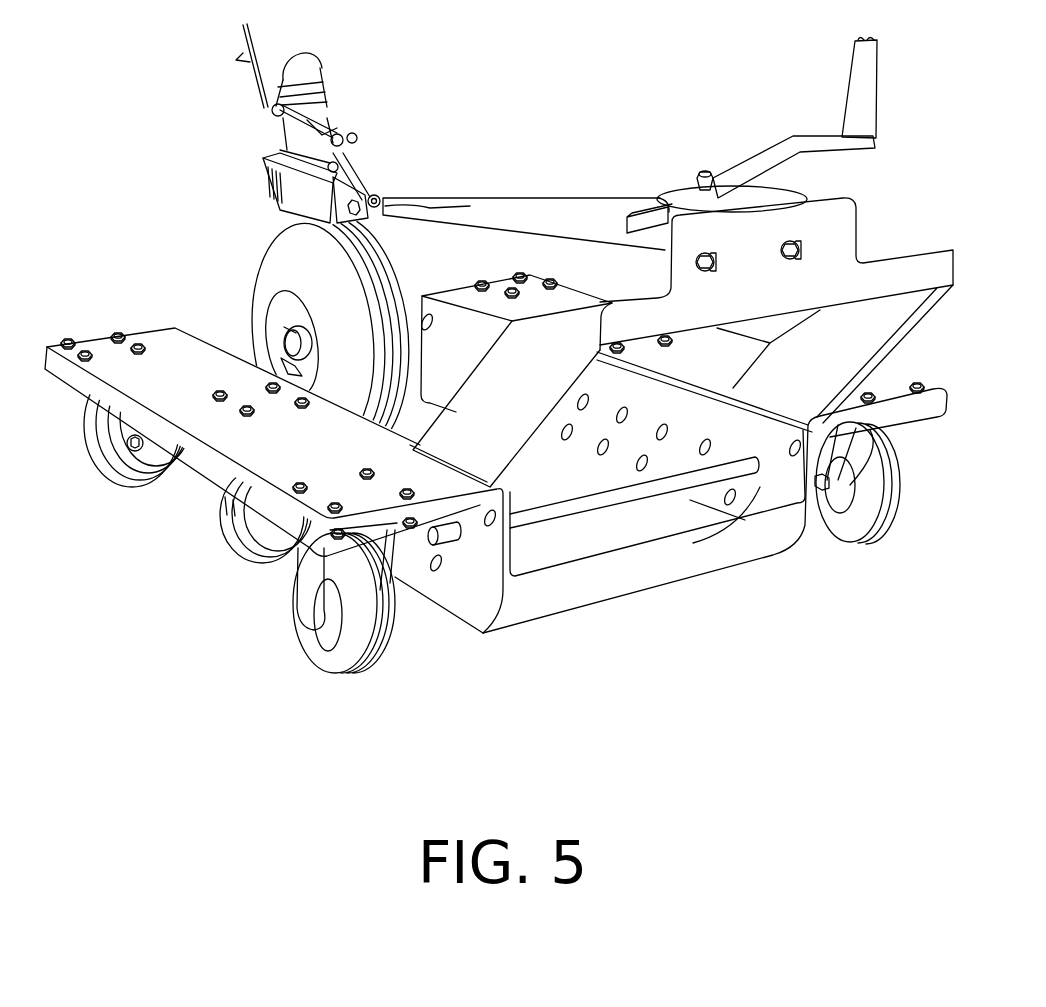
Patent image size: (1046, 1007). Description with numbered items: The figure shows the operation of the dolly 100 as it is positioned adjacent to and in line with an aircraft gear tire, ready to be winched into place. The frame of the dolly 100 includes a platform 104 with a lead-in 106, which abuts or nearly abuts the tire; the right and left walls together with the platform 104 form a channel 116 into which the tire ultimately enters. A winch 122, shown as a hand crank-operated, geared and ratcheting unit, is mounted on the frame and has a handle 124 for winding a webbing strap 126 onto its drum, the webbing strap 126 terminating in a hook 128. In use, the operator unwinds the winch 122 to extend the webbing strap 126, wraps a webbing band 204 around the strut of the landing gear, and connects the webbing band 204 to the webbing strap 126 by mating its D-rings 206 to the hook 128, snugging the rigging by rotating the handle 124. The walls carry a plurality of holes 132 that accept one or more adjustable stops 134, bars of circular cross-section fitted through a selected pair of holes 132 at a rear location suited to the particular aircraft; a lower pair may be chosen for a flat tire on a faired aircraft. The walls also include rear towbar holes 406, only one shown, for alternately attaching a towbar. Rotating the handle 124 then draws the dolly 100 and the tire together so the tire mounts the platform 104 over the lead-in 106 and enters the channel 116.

The dolly 100 is at (518, 97).
The platform 104 is at (547, 502).
The lead-in 106 is at (527, 458).
The channel 116 is at (512, 479).
The winch 122 is at (720, 178).
The handle 124 is at (878, 118).
The webbing strap 126 is at (496, 200).
The hook 128 is at (378, 198).
The holes 132 is at (626, 412).
The adjustable stop 134 is at (533, 517).
The webbing band 204 is at (264, 190).
The D-rings 206 is at (357, 177).
The rear towbar holes 406 is at (488, 527).